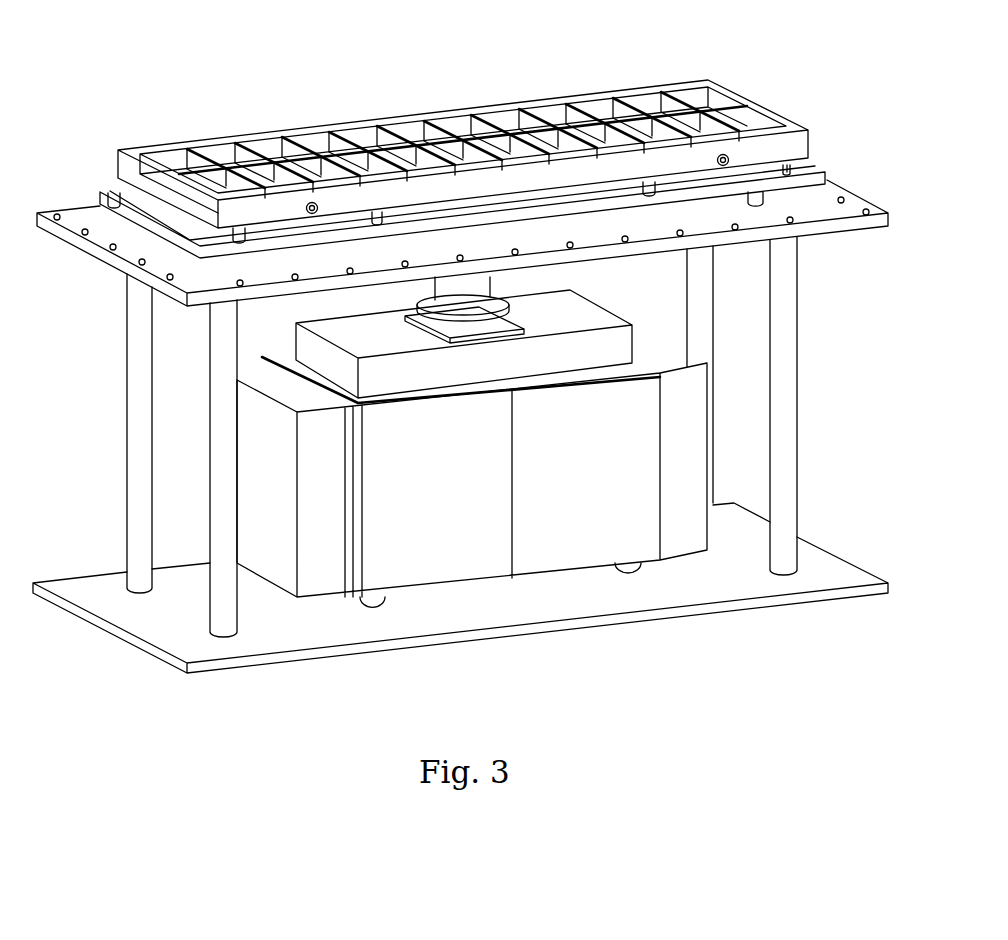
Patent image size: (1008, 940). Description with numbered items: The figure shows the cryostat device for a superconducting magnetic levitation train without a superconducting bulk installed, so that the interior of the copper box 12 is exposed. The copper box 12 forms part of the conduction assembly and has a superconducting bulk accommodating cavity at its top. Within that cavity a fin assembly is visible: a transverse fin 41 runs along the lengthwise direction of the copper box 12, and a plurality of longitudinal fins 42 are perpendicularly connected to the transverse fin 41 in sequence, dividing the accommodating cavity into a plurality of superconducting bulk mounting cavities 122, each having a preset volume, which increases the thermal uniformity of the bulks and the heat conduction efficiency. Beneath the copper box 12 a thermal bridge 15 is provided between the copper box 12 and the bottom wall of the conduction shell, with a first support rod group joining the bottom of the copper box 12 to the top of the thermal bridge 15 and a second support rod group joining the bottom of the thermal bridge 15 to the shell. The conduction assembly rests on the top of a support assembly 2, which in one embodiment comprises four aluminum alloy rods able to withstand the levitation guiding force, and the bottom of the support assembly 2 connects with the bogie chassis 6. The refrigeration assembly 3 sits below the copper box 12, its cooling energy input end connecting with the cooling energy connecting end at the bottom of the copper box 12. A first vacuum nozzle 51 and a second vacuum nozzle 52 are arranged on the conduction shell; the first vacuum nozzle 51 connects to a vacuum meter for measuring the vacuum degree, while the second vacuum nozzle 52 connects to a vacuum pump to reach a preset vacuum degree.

The support assembly 2 is at (127, 405).
The refrigeration assembly 3 is at (468, 552).
The bogie chassis 6 is at (663, 613).
The copper box 12 is at (495, 120).
The superconducting bulk mounting cavity 122 is at (602, 107).
The transverse fin 41 is at (477, 110).
The longitudinal fin 42 is at (252, 150).
The thermal bridge 15 is at (580, 207).
The first vacuum nozzle 51 is at (305, 210).
The second vacuum nozzle 52 is at (733, 165).